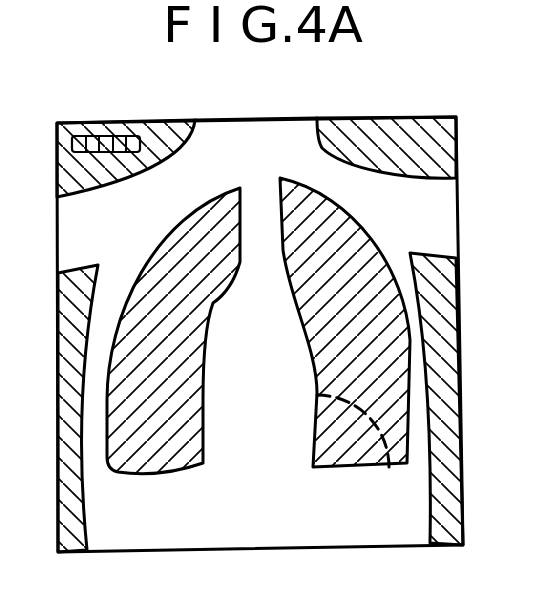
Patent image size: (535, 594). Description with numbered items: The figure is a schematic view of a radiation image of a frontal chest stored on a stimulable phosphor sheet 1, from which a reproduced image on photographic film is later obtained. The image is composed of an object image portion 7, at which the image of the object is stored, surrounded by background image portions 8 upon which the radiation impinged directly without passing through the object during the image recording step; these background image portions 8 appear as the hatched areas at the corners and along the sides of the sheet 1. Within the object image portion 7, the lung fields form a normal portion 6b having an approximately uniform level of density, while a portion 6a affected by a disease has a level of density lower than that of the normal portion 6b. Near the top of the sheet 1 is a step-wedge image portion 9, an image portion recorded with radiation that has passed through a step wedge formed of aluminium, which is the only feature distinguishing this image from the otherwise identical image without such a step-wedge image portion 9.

The stimulable phosphor sheet 1 is at (443, 210).
The portion affected by a disease 6a is at (363, 453).
The normal portion 6b is at (300, 275).
The object image portion 7 is at (271, 133).
The background image portions 8 is at (443, 142).
The step-wedge image portion 9 is at (108, 134).